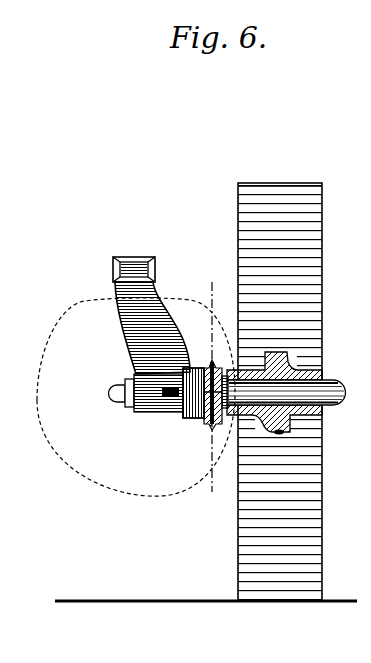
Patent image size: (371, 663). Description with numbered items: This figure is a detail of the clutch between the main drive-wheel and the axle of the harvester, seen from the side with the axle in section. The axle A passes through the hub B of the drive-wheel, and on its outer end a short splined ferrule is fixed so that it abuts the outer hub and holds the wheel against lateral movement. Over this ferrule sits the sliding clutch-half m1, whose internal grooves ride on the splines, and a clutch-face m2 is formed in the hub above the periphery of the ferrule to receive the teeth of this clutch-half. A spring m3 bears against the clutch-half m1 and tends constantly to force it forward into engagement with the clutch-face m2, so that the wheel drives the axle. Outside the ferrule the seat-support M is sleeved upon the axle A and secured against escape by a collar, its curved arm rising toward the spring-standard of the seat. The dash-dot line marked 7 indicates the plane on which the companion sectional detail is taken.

The shaft A is at (286, 380).
The frame bed B is at (274, 392).
The seat-support M is at (137, 421).
The sliding clutch-half m1 is at (221, 364).
The clutch-face m2 is at (217, 424).
The spring m3 is at (192, 418).
The section line 7- 7 is at (187, 282).